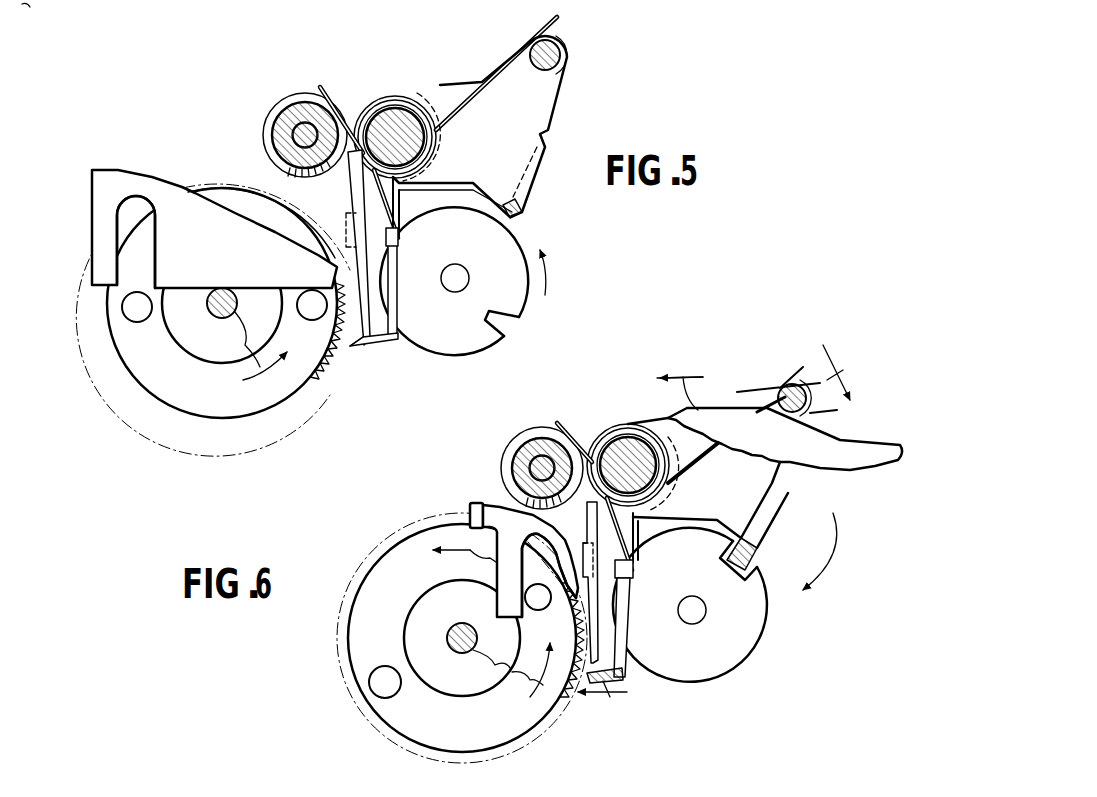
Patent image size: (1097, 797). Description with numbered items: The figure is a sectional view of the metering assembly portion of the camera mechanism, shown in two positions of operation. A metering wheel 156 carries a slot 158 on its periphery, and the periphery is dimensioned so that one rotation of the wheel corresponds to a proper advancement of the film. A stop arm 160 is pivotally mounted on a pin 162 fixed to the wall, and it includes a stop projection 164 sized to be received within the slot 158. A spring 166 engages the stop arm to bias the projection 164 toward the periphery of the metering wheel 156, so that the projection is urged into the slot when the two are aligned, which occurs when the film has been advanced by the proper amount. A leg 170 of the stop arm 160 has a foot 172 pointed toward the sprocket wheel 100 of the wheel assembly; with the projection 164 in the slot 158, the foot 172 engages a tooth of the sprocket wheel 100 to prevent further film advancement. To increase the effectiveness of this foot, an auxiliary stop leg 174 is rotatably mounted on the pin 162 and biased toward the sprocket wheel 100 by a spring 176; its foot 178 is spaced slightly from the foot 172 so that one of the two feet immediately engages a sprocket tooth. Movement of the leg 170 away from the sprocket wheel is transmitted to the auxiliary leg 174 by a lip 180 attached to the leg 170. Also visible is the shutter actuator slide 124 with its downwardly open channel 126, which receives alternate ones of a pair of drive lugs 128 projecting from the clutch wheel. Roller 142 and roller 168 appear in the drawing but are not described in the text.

In FIG. 5, the sprocket wheel 100 is at (215, 408).
In FIG. 6, the sprocket wheel 100 is at (363, 623).
In FIG. 5, the actuator slide 124 is at (100, 202).
In FIG. 6, the actuator slide 124 is at (524, 560).
In FIG. 5, the channel 126 is at (150, 235).
In FIG. 6, the channel 126 is at (530, 563).
In FIG. 5, the drive lugs 128 is at (135, 307).
In FIG. 6, the drive lugs 128 is at (535, 610).
In FIG. 5, the roller 142 is at (290, 125).
In FIG. 6, the roller 142 is at (523, 473).
In FIG. 5, the metering wheel 156 is at (487, 350).
In FIG. 6, the metering wheel 156 is at (727, 657).
In FIG. 5, the slot 158 is at (510, 327).
In FIG. 6, the slot 158 is at (760, 587).
In FIG. 5, the stop arm 160 is at (533, 105).
In FIG. 6, the stop arm 160 is at (765, 478).
In FIG. 5, the pin 162 is at (397, 110).
In FIG. 6, the pin 162 is at (618, 440).
In FIG. 5, the stop projection 164 is at (513, 215).
In FIG. 6, the stop projection 164 is at (757, 550).
In FIG. 5, the spring 166 is at (507, 63).
In FIG. 6, the spring 166 is at (697, 468).
In FIG. 5, the roller 168 is at (567, 50).
In FIG. 6, the roller 168 is at (794, 398).
In FIG. 5, the leg 170 is at (350, 205).
In FIG. 6, the leg 170 is at (600, 520).
In FIG. 5, the foot 172 is at (352, 345).
In FIG. 6, the foot 172 is at (602, 682).
In FIG. 5, the auxiliary stop leg 174 is at (400, 340).
In FIG. 6, the auxiliary stop leg 174 is at (622, 627).
In FIG. 5, the spring 176 is at (388, 202).
In FIG. 6, the spring 176 is at (632, 570).
In FIG. 5, the foot 178 is at (373, 348).
In FIG. 5, the lip 180 is at (320, 222).